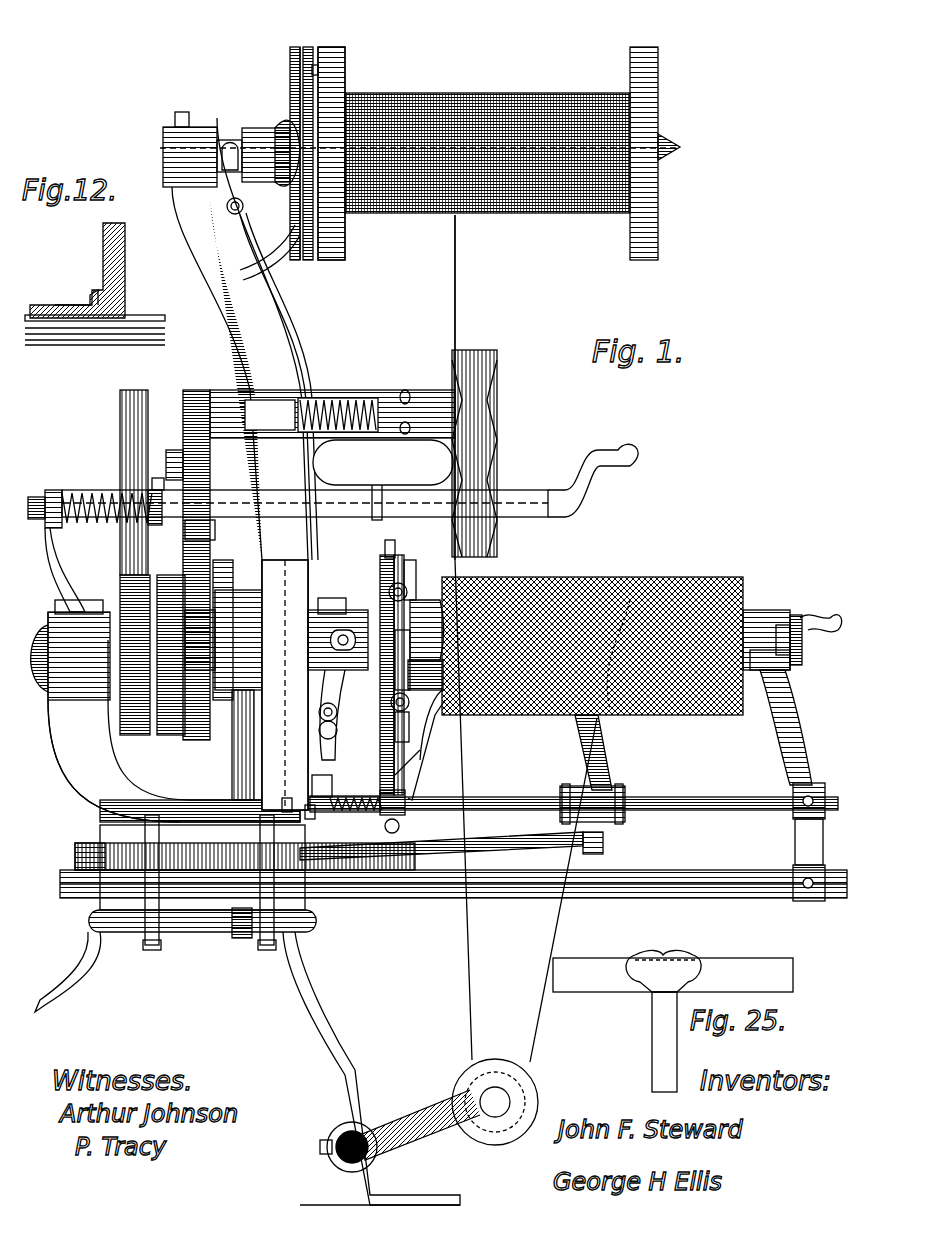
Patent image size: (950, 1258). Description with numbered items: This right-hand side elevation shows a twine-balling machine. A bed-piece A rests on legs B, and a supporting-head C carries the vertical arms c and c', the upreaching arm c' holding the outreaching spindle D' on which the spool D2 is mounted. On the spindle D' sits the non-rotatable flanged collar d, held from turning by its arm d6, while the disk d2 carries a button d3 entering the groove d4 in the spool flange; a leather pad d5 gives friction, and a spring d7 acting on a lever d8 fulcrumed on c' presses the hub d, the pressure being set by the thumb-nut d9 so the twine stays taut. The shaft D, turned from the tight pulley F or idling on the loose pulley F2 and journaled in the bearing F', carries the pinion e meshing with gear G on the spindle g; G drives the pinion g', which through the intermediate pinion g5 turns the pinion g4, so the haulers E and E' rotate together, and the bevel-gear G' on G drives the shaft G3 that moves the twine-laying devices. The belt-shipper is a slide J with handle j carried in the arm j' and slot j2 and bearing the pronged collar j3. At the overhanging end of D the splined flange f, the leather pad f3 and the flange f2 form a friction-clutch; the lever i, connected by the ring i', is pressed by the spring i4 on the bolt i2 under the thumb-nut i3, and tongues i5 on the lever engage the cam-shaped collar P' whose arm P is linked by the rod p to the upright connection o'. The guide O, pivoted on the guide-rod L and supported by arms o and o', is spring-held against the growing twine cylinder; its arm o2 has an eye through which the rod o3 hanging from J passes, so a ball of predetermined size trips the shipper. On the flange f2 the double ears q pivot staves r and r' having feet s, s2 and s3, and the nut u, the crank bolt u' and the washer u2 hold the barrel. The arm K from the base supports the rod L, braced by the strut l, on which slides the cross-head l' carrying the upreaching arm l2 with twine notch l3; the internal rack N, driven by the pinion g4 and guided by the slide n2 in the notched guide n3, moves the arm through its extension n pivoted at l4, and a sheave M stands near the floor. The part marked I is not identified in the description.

In FIG. 1, the spool D2 is at (545, 93).
In FIG. 1, the spindle D' is at (671, 136).
In FIG. 1, the shaft D is at (66, 658).
In FIG. 12, the shaft D is at (95, 313).
In FIG. 1, the flanged collar d is at (295, 47).
In FIG. 12, the flanged collar d is at (103, 240).
In FIG. 1, the disk d2 is at (308, 47).
In FIG. 1, the button d3 is at (342, 47).
In FIG. 1, the groove d4 is at (318, 72).
In FIG. 1, the pad d5 is at (305, 258).
In FIG. 12, the pad d5 is at (125, 240).
In FIG. 1, the arm d6 is at (283, 252).
In FIG. 1, the spring d7 is at (362, 400).
In FIG. 1, the lever d8 is at (308, 385).
In FIG. 1, the thumb-nut d9 is at (408, 392).
In FIG. 1, the upreaching arm c' is at (240, 464).
In FIG. 1, the vertical arm c is at (114, 761).
In FIG. 1, the supporting-head C is at (174, 717).
In FIG. 1, the pinion g4 is at (190, 392).
In FIG. 1, the intermediate pinion g5 is at (180, 452).
In FIG. 1, the pinion g' is at (193, 544).
In FIG. 1, the spindle g is at (405, 726).
In FIG. 1, the gear G is at (227, 627).
In FIG. 1, the bevel-gear G' is at (252, 631).
In FIG. 1, the shaft G3 is at (234, 736).
In FIG. 1, the handle j is at (350, 480).
In FIG. 1, the arm j' is at (90, 534).
In FIG. 1, the slot j2 is at (300, 497).
In FIG. 1, the collar j3 is at (158, 478).
In FIG. 1, the slide J is at (158, 523).
In FIG. 1, the hauler E is at (483, 453).
In FIG. 1, the hauler E' is at (486, 387).
In FIG. 1, the tight pulley F is at (135, 665).
In FIG. 1, the loose pulley F2 is at (172, 732).
In FIG. 1, the journal-bearing F' is at (285, 685).
In FIG. 1, the pinion e is at (186, 648).
In FIG. 1, the flange f is at (380, 572).
In FIG. 1, the flange f2 is at (398, 574).
In FIG. 1, the leather pad f3 is at (380, 562).
In FIG. 1, the lever i is at (332, 725).
In FIG. 1, the ring i' is at (338, 627).
In FIG. 1, the bolt i2 is at (285, 798).
In FIG. 1, the thumb-nut i3 is at (400, 826).
In FIG. 1, the spring i4 is at (385, 795).
In FIG. 1, the tongues i5 is at (306, 820).
In FIG. 1, the guide O is at (668, 577).
In FIG. 25, the guide O is at (673, 975).
In FIG. 1, the arm o is at (774, 727).
In FIG. 1, the arm o' is at (437, 725).
In FIG. 1, the arm o2 is at (392, 775).
In FIG. 1, the rod o3 is at (395, 545).
In FIG. 1, the roller shaft I is at (772, 612).
In FIG. 1, the nut u is at (821, 594).
In FIG. 1, the threaded bolt u' is at (800, 617).
In FIG. 1, the washer u2 is at (790, 625).
In FIG. 1, the stave r is at (775, 675).
In FIG. 1, the stave r' is at (411, 657).
In FIG. 1, the double ear q is at (408, 598).
In FIG. 1, the foot s is at (425, 664).
In FIG. 1, the foot s2 is at (411, 586).
In FIG. 1, the foot s3 is at (410, 697).
In FIG. 1, the rod p is at (420, 760).
In FIG. 1, the spring-arm P is at (335, 809).
In FIG. 1, the collar P' is at (326, 785).
In FIG. 1, the guide-rod L is at (453, 847).
In FIG. 1, the strut l is at (809, 842).
In FIG. 1, the cross-head l' is at (598, 791).
In FIG. 1, the upreaching arm l2 is at (606, 755).
In FIG. 25, the upreaching arm l2 is at (652, 1040).
In FIG. 1, the twine-carrying notch l3 is at (608, 640).
In FIG. 25, the twine-carrying notch l3 is at (664, 950).
In FIG. 1, the pivot l4 is at (604, 843).
In FIG. 1, the extension n is at (502, 843).
In FIG. 1, the arm K is at (670, 900).
In FIG. 1, the bed-piece A is at (245, 867).
In FIG. 1, the internal rack N is at (90, 870).
In FIG. 1, the guide n2 is at (178, 878).
In FIG. 1, the guide n3 is at (254, 882).
In FIG. 1, the legs B is at (110, 972).
In FIG. 1, the sheave M is at (492, 1062).